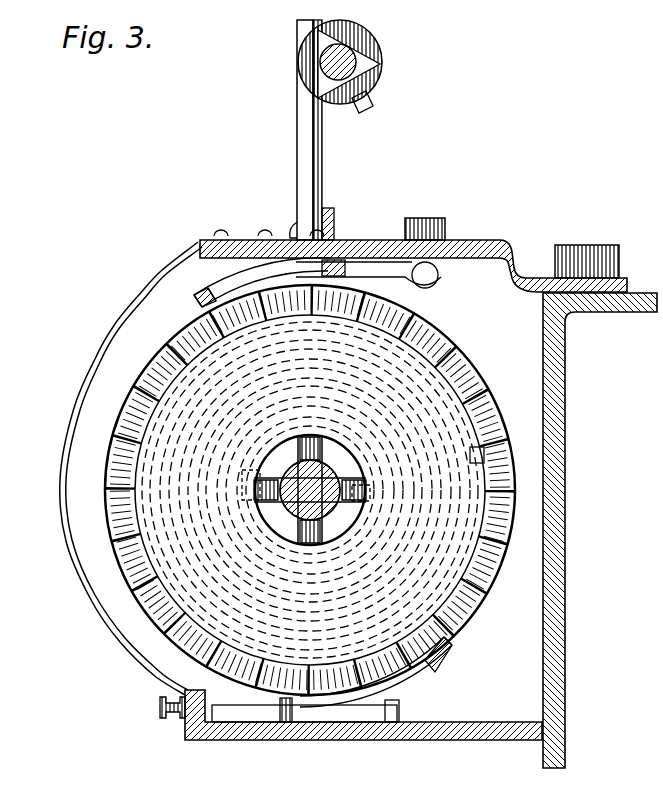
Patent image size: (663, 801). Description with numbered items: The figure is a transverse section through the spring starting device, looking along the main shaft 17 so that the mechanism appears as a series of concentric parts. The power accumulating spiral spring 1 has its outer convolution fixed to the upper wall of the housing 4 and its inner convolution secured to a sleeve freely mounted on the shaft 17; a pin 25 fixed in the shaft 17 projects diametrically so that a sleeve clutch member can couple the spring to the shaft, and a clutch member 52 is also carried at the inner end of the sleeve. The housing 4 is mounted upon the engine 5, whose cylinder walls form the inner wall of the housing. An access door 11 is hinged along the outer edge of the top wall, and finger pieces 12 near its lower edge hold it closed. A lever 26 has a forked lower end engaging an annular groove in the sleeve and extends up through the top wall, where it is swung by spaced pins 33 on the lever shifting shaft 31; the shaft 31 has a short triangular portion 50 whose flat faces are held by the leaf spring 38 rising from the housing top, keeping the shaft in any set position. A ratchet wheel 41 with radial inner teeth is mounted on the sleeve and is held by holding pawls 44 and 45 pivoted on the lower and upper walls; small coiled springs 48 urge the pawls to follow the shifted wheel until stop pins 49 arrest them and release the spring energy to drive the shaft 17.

The power accumulating spiral spring 1 is at (435, 570).
The housing 4 is at (450, 706).
The engine 5 is at (566, 402).
The access door 11 is at (90, 361).
The finger pieces 12 is at (164, 712).
The shaft 17 is at (405, 527).
The pin 25 is at (322, 456).
The lever 26 is at (300, 510).
The lever shifting shaft 31 is at (382, 58).
The spaced pins 33 is at (370, 108).
The leaf spring 38 is at (330, 162).
The ratchet wheel 41 is at (512, 481).
The holding pawl 44 is at (212, 300).
The holding pawl 45 is at (412, 673).
The coiled spring 48 is at (340, 262).
The stop pin 49 is at (244, 262).
The triangular portion 50 is at (376, 64).
The clutch member 52 is at (484, 456).